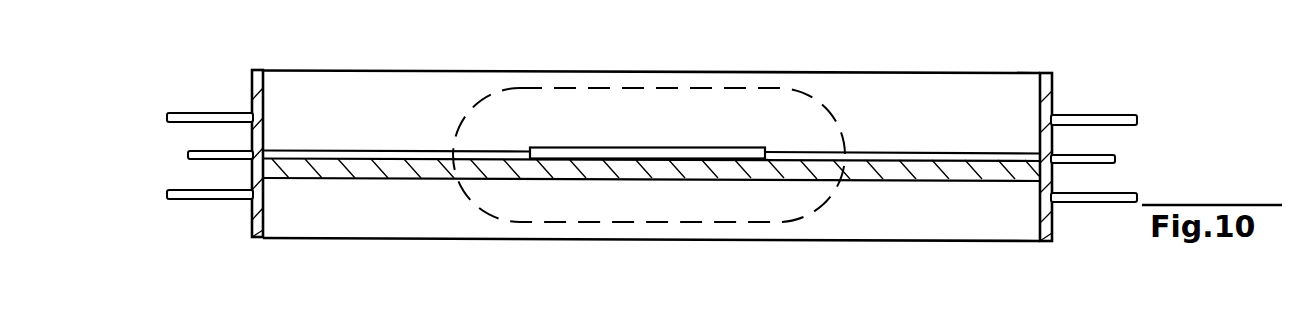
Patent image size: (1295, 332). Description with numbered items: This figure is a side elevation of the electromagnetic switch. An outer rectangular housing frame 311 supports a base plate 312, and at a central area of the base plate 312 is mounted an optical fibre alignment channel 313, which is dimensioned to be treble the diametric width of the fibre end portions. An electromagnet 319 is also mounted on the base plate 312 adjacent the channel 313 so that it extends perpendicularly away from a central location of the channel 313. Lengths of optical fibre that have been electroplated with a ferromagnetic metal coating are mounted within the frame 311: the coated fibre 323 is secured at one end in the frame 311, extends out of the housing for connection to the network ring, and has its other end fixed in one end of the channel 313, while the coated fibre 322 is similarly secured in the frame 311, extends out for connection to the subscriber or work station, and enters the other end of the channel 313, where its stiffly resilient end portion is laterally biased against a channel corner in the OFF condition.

The housing frame 311 is at (252, 87).
The base plate 312 is at (401, 171).
The optical fibre alignment channel 313 is at (563, 152).
The electromagnet 319 is at (805, 118).
The coated optical fibre 322 is at (343, 157).
The coated optical fibre 323 is at (963, 153).